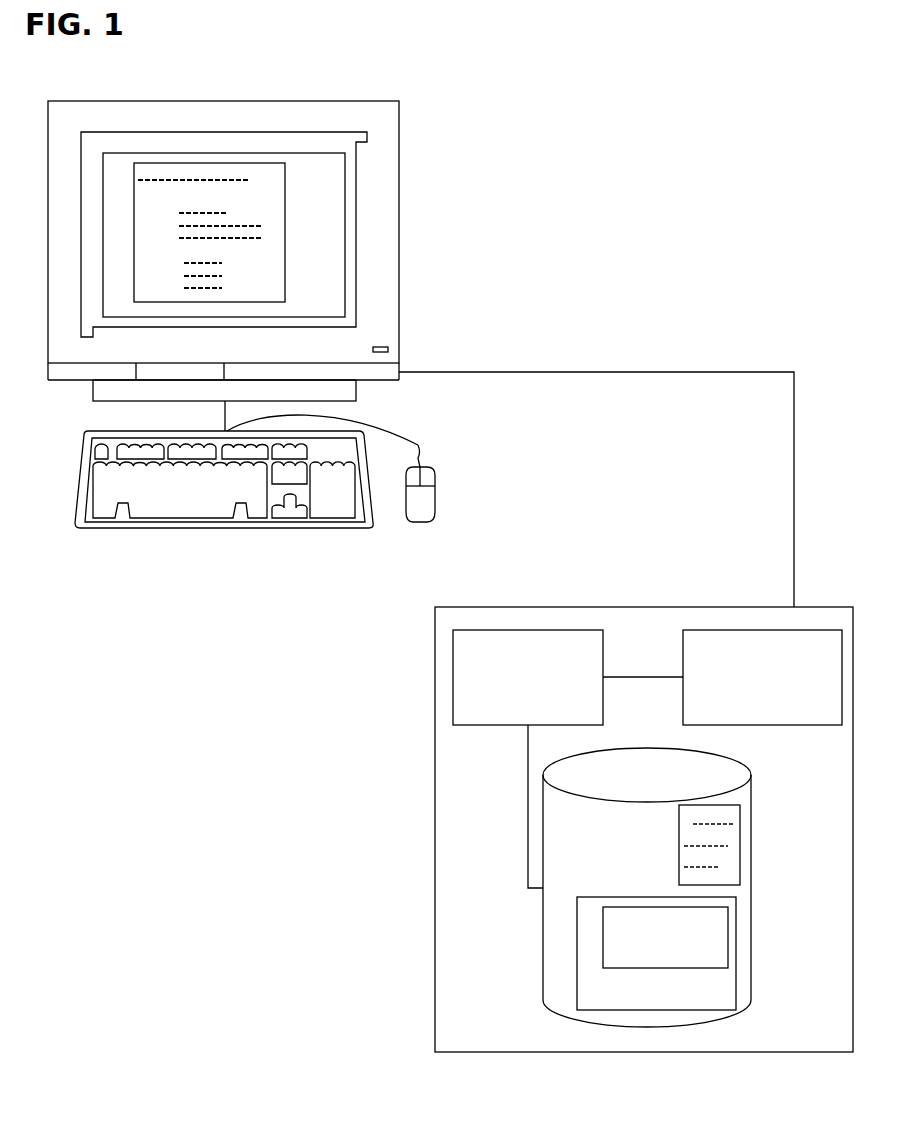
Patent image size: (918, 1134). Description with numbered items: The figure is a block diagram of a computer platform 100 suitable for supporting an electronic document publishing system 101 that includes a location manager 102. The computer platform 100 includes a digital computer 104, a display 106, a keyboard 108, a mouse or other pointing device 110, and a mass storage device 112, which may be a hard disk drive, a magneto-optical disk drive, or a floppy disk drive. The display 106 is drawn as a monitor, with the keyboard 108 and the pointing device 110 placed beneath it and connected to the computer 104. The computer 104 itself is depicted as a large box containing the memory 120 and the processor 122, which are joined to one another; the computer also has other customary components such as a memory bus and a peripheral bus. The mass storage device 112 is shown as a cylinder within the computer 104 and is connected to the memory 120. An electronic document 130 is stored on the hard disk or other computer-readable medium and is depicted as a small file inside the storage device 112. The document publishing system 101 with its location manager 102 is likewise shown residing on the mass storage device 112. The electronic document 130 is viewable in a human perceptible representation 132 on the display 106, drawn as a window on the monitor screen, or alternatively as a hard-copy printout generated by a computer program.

The computer platform 100 is at (181, 780).
The electronic document publishing system 101 is at (577, 945).
The location manager 102 is at (638, 972).
The digital computer 104 is at (435, 680).
The display 106 is at (400, 168).
The keyboard 108 is at (225, 528).
The mouse or other pointing device 110 is at (430, 472).
The mass storage device 112 is at (753, 890).
The memory 120 is at (603, 700).
The processor 122 is at (683, 653).
The electronic document 130 is at (732, 853).
The human perceptible representation 132 is at (262, 257).